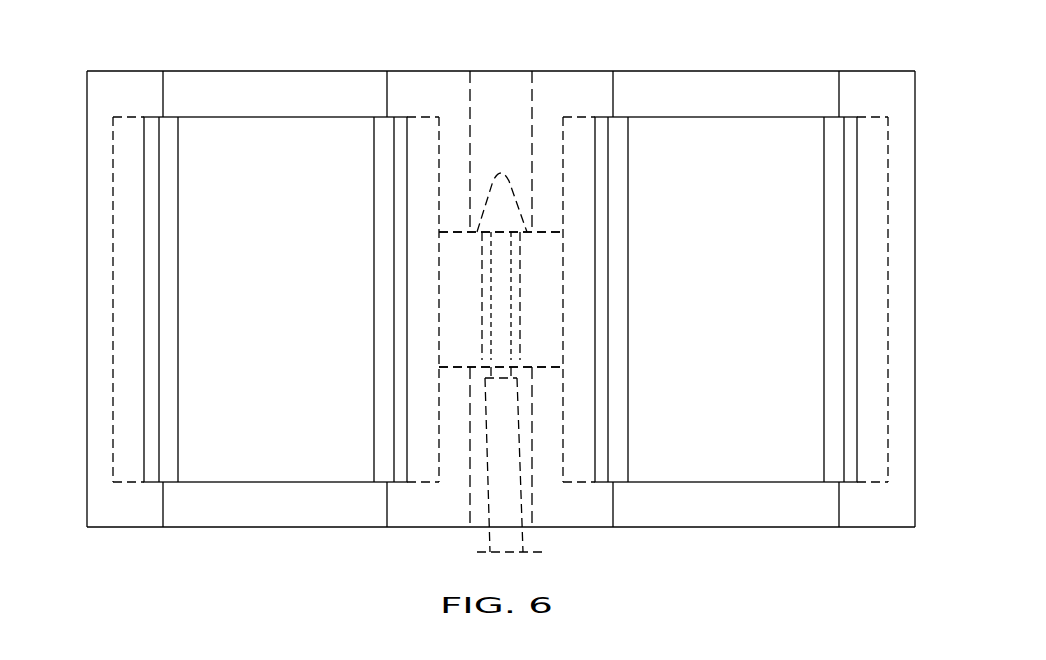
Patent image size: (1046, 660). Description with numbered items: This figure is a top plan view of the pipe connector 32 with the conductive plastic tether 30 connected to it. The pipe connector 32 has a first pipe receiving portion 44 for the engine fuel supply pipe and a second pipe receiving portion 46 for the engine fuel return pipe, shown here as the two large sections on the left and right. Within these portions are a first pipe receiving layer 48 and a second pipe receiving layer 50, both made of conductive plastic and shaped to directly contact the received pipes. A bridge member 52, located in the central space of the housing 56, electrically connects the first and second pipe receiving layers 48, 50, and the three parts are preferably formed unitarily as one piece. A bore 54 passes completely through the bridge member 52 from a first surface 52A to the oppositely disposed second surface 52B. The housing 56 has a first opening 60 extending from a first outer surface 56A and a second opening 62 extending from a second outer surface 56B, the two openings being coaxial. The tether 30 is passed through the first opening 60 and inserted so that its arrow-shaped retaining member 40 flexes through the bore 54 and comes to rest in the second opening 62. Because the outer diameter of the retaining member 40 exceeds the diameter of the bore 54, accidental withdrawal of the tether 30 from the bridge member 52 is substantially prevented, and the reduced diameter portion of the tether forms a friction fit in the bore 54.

The conductive plastic tether 30 is at (532, 508).
The pipe connector 32 is at (917, 502).
The retaining member 40 is at (485, 206).
The first pipe receiving portion 44 is at (254, 70).
The second pipe receiving portion 46 is at (756, 70).
The first pipe receiving layer 48 is at (223, 453).
The second pipe receiving layer 50 is at (749, 453).
The bridge member 52 is at (543, 228).
The first surface 52A is at (538, 365).
The second surface 52B is at (463, 232).
The bore 54 is at (522, 298).
The housing 56 is at (87, 503).
The first outer surface 56A is at (305, 527).
The second outer surface 56B is at (683, 70).
The first opening 60 is at (480, 528).
The second opening 62 is at (501, 70).